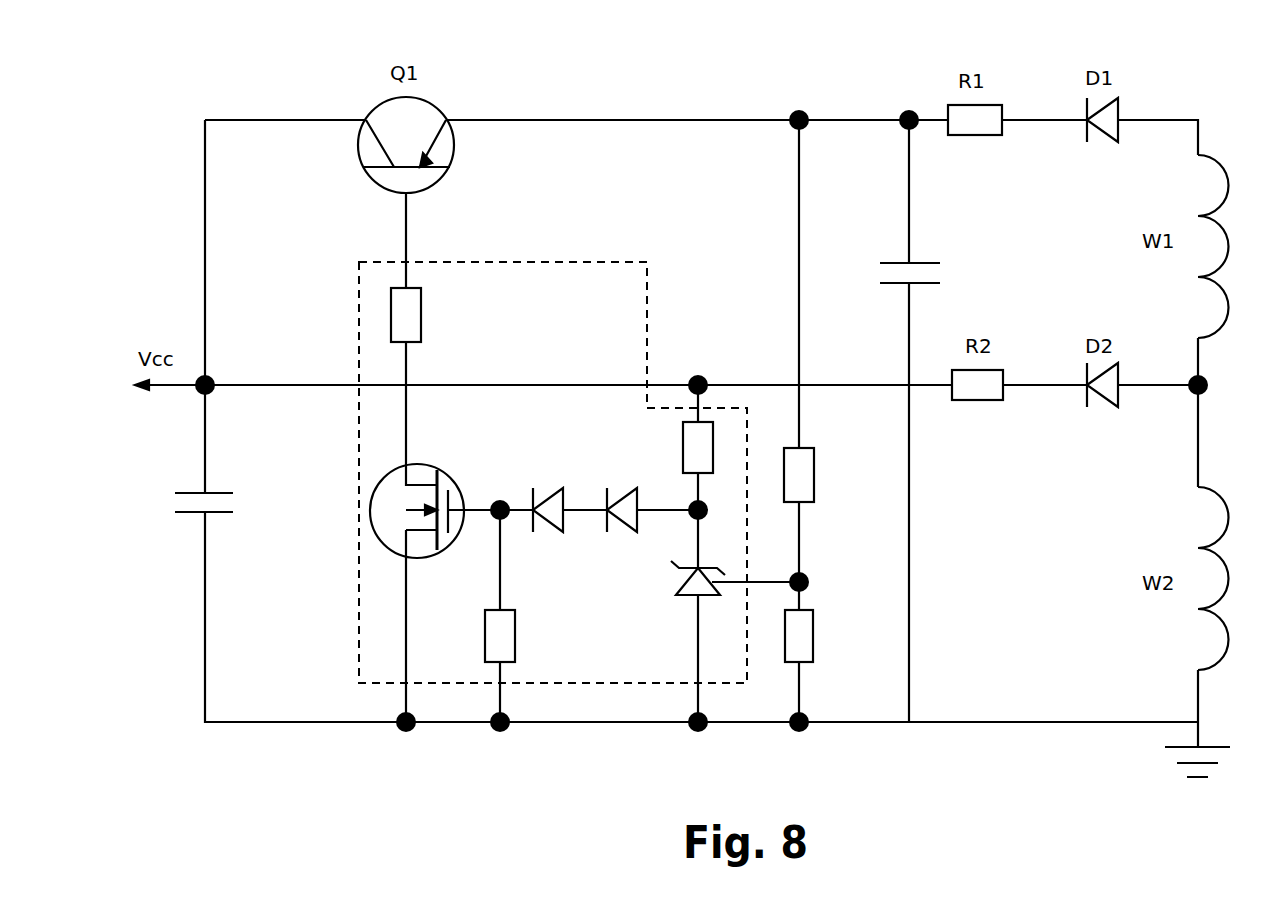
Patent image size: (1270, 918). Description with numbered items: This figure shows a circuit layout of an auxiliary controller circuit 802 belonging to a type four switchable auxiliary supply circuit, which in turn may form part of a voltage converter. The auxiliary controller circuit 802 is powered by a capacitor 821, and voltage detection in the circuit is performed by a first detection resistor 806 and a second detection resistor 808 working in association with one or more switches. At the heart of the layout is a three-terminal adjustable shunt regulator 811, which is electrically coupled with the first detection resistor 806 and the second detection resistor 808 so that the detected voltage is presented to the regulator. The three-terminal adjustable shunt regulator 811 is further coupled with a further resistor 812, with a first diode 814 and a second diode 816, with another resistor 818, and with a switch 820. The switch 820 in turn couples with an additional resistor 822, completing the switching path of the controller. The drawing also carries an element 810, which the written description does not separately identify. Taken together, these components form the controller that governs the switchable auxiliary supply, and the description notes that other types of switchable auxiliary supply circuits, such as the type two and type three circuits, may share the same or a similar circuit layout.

The auxiliary controller circuit 802 is at (582, 255).
The resistor R3 806 is at (830, 458).
The resistor R4 808 is at (830, 619).
The capacitor C1 810 is at (962, 271).
The three-terminal adjustable shunt regulator 811 is at (683, 612).
The resistor R5 812 is at (732, 440).
The diode D4 814 is at (627, 448).
The diode D3 816 is at (552, 448).
The resistor R7 818 is at (532, 603).
The switch Q2 820 is at (433, 449).
The capacitor C2 821 is at (250, 448).
The resistor R6 822 is at (474, 320).